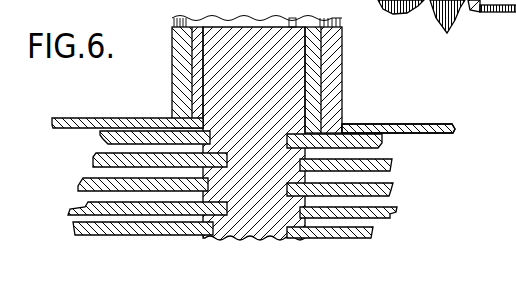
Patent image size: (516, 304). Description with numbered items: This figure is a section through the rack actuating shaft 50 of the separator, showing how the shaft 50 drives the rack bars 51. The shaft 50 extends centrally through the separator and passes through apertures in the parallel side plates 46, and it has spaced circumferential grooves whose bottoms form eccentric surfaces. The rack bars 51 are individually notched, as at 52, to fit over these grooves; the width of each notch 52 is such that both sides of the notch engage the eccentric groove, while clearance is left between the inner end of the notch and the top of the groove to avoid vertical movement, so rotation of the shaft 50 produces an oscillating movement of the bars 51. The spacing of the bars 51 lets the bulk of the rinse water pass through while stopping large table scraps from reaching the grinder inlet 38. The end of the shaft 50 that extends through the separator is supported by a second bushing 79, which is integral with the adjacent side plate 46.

The inlet 38 is at (485, 12).
The side plates 46 is at (388, 125).
The shaft 50 is at (212, 86).
The rack bars 51 is at (381, 147).
The notches 52 is at (213, 236).
The second bushing 79 is at (335, 79).